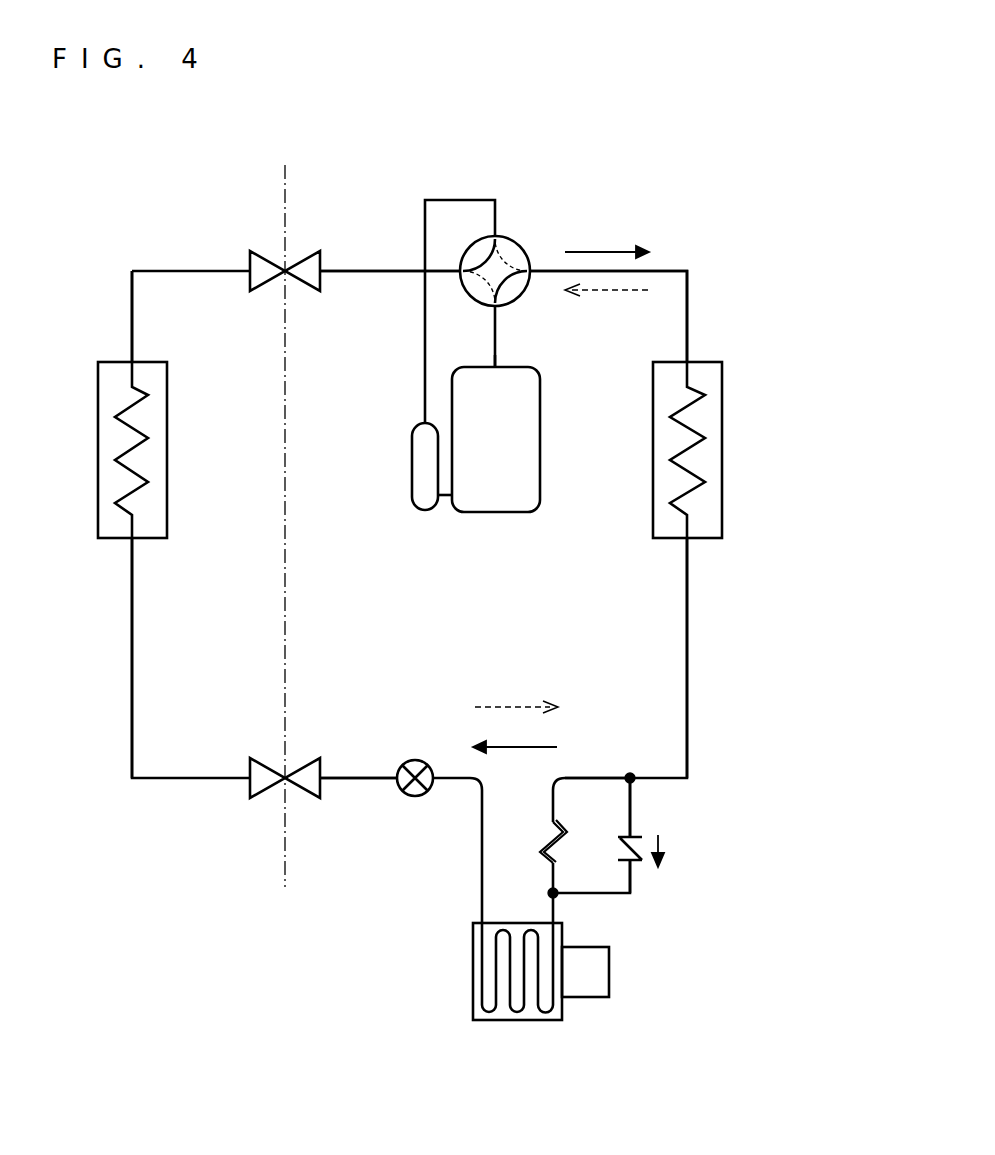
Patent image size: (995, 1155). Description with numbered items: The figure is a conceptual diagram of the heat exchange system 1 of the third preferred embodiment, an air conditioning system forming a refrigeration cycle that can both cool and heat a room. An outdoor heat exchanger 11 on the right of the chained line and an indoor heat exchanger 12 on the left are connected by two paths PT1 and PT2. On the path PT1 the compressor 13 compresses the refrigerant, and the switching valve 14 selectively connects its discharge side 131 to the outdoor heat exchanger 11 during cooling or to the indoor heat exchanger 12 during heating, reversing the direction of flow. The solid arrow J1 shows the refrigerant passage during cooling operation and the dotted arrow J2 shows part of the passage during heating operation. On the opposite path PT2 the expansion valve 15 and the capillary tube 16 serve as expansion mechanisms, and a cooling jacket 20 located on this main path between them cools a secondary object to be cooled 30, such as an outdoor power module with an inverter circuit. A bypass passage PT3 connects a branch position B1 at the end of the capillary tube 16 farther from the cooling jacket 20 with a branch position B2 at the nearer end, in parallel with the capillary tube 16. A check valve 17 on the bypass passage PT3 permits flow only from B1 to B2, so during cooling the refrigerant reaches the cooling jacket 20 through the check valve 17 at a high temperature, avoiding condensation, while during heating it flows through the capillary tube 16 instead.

The heat exchange system 1 is at (172, 188).
The outdoor heat exchanger 11 is at (722, 450).
The indoor heat exchanger 12 is at (98, 452).
The compressor 13 is at (540, 493).
The discharge side 131 is at (504, 362).
The switching valve 14 is at (500, 238).
The expansion valve 15 is at (415, 797).
The capillary tube 16 is at (558, 840).
The check valve 17 is at (642, 839).
The cooling jacket 20 is at (515, 1022).
The secondary object to be cooled 30 is at (596, 975).
The branch position B1 is at (630, 774).
The branch position B2 is at (551, 891).
The path PT1 is at (383, 271).
The path PT2 is at (132, 679).
The bypass passage PT3 is at (632, 793).
The arrow J1 is at (664, 843).
The arrow J2 is at (561, 498).